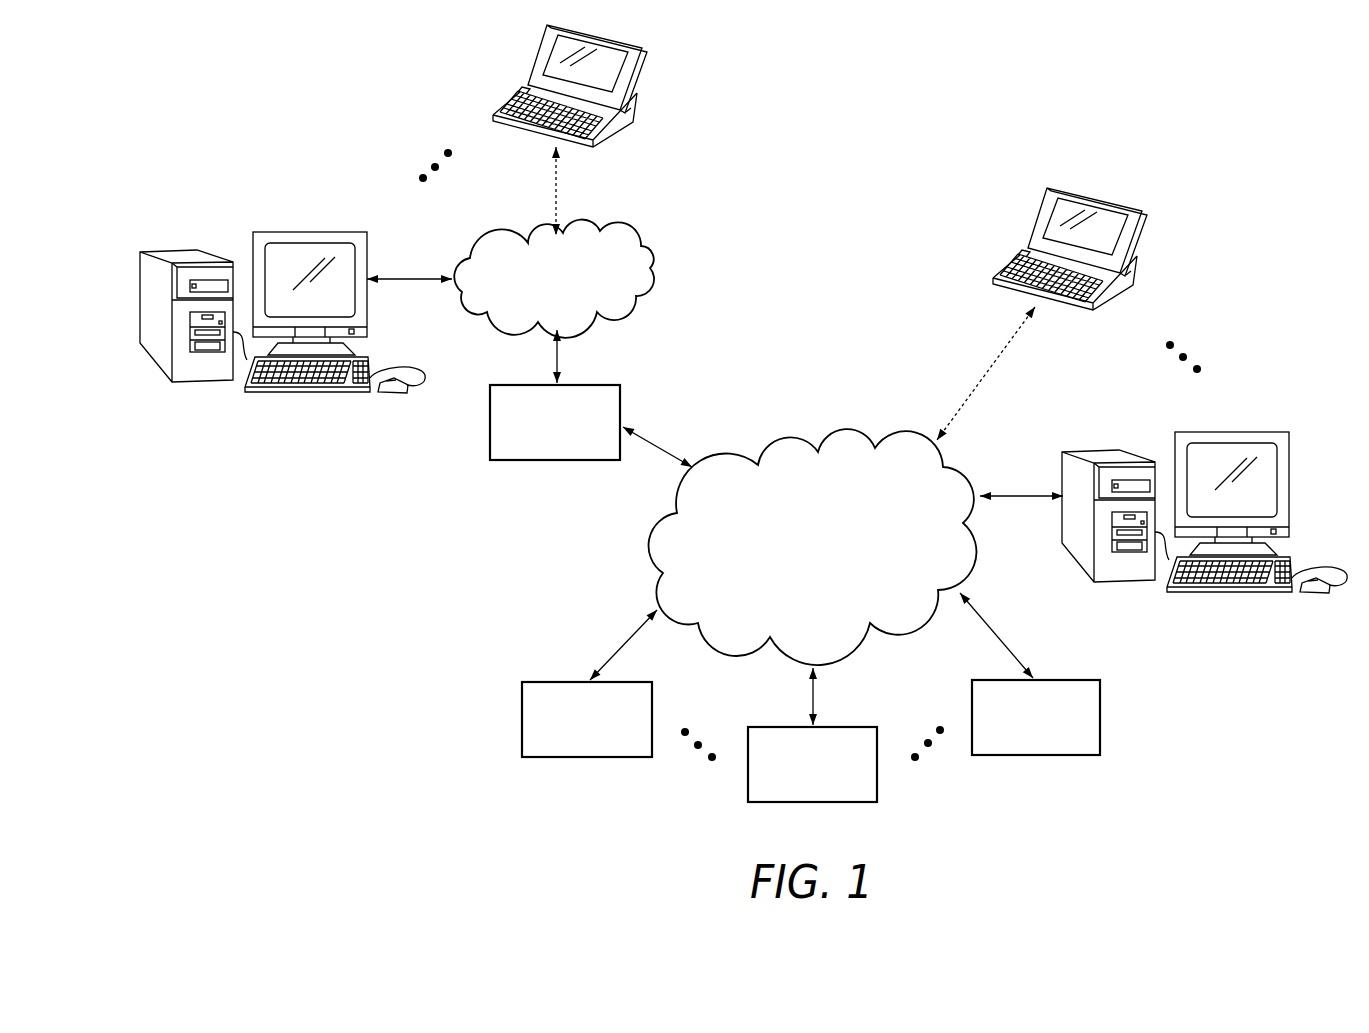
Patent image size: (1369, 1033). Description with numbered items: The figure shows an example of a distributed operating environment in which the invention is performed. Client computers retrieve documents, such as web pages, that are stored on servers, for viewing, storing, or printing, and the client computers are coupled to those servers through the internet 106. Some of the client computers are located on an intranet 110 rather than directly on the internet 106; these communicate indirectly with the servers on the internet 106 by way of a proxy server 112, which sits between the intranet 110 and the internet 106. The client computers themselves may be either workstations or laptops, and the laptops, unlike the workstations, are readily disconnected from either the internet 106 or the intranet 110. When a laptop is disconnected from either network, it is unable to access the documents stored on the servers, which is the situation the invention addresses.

The internet 106 is at (790, 440).
The intranet 110 is at (583, 323).
The proxy server 112 is at (543, 463).